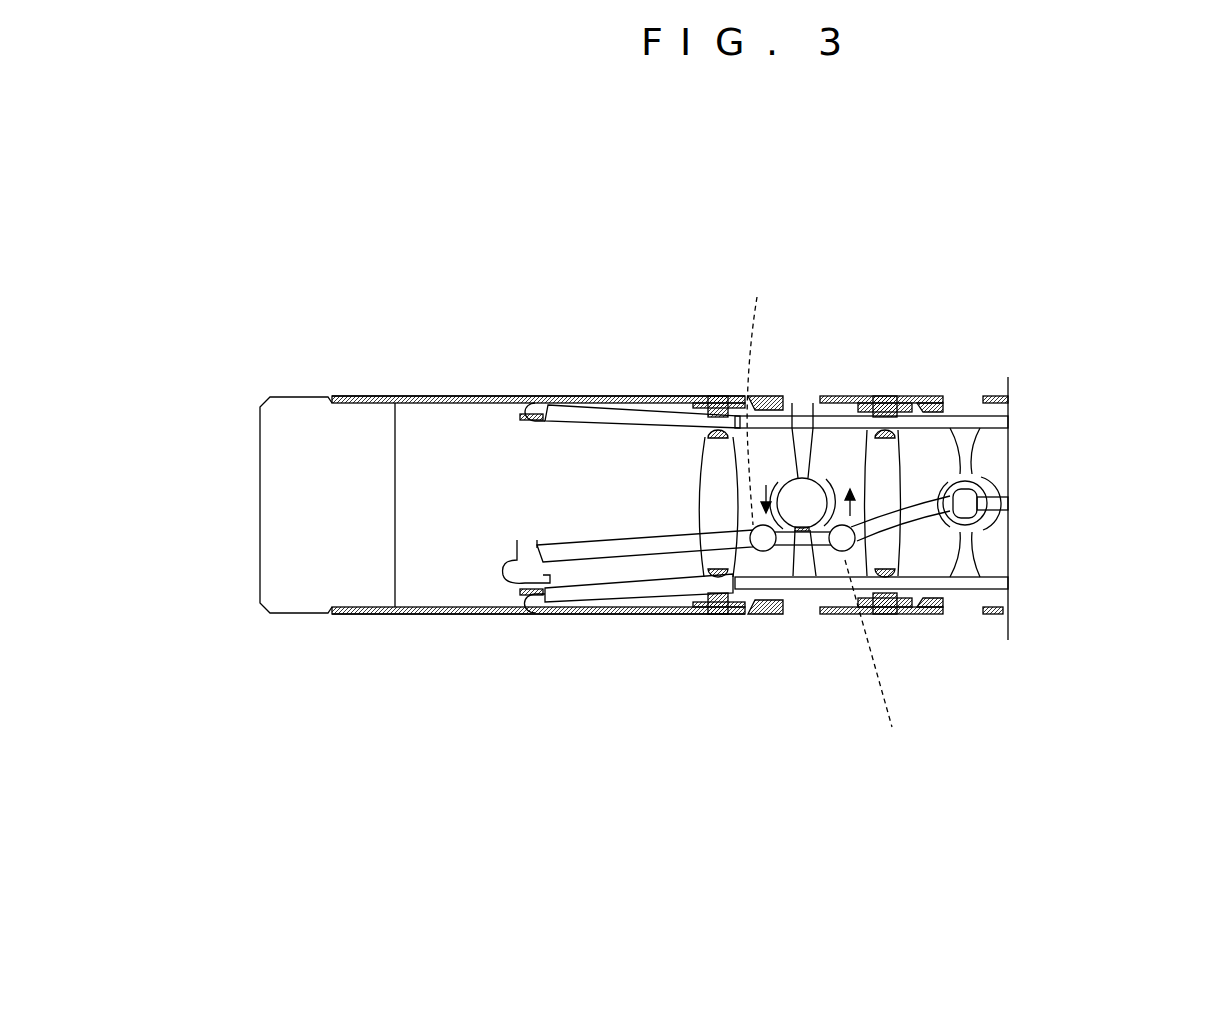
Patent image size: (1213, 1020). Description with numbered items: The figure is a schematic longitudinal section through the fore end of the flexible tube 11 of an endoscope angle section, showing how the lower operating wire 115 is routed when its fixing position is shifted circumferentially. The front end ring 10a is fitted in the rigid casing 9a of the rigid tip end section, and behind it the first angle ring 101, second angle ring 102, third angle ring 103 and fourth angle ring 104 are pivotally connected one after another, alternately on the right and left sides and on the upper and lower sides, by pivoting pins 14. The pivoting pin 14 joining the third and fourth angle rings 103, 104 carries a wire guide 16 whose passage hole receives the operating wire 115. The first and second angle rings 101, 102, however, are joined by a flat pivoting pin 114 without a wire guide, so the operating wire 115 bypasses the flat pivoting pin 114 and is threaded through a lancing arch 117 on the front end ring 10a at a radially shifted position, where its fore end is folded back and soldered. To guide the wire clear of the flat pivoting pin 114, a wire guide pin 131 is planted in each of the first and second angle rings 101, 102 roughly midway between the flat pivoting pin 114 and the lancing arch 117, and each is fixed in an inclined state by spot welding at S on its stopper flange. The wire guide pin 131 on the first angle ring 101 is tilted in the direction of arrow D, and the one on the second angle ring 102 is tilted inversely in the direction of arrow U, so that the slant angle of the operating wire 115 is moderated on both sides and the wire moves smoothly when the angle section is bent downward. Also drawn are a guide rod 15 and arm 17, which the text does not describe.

The rigid casing 9a is at (350, 453).
The front end ring 10a is at (640, 612).
The flexible tube 11 is at (582, 390).
The pivoting pin 14 is at (713, 397).
The guide rod 15 is at (966, 421).
The wire guide 16 is at (700, 438).
The spring arm 17 is at (533, 397).
The flat pivoting pin 114 is at (800, 488).
The lower operating wire 115 is at (1003, 504).
The lancing arch 117 is at (518, 550).
The wire guide pin 131 is at (814, 589).
The first angle ring 101 is at (768, 610).
The second angle ring 102 is at (840, 603).
The third angle ring 103 is at (935, 600).
The fourth angle ring 104 is at (1003, 598).
The spot weld S is at (824, 515).
The arrow D is at (768, 485).
The arrow U is at (851, 488).